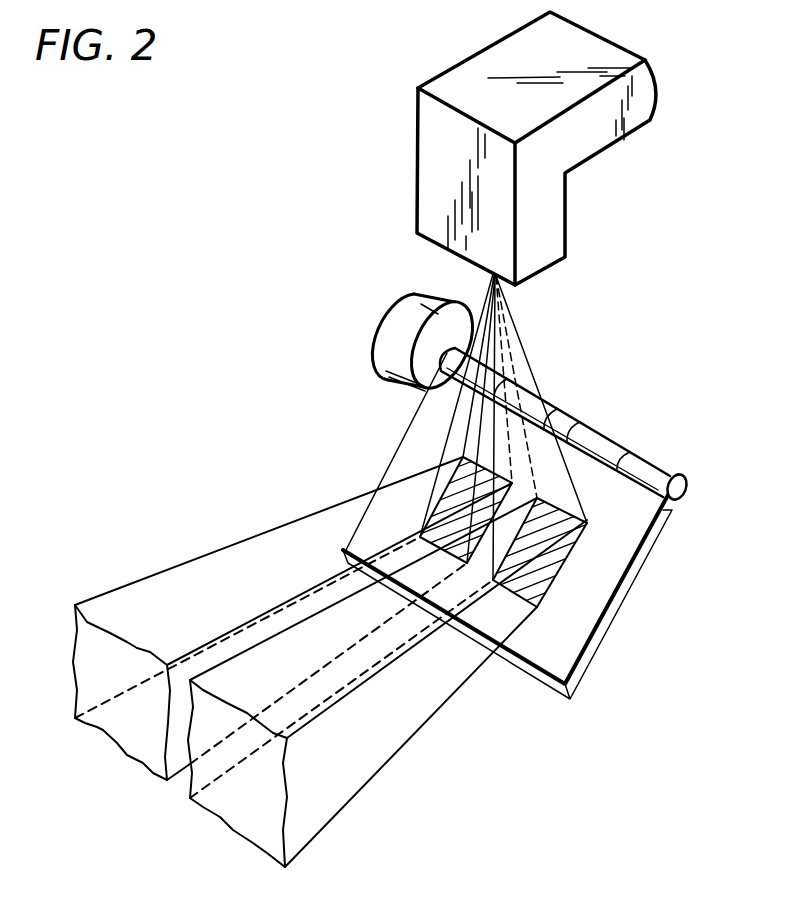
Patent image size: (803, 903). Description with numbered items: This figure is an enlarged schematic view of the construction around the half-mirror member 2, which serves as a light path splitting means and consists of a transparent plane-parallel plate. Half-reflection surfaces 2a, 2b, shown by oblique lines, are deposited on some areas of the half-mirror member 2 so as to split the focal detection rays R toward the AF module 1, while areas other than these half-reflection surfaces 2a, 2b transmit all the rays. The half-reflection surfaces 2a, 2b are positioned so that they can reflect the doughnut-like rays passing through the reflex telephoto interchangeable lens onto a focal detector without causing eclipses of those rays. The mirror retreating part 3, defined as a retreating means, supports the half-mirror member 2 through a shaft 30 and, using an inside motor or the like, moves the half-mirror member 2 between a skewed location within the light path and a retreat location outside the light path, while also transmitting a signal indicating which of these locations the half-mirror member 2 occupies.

The AF module 1 is at (483, 70).
The half-mirror member 2 is at (643, 552).
The half-reflection surface 2a is at (557, 573).
The half-reflection surface 2b is at (450, 490).
The mirror retreating part 3 is at (375, 351).
The shaft 30 is at (680, 483).
The focal detection rays R is at (103, 727).